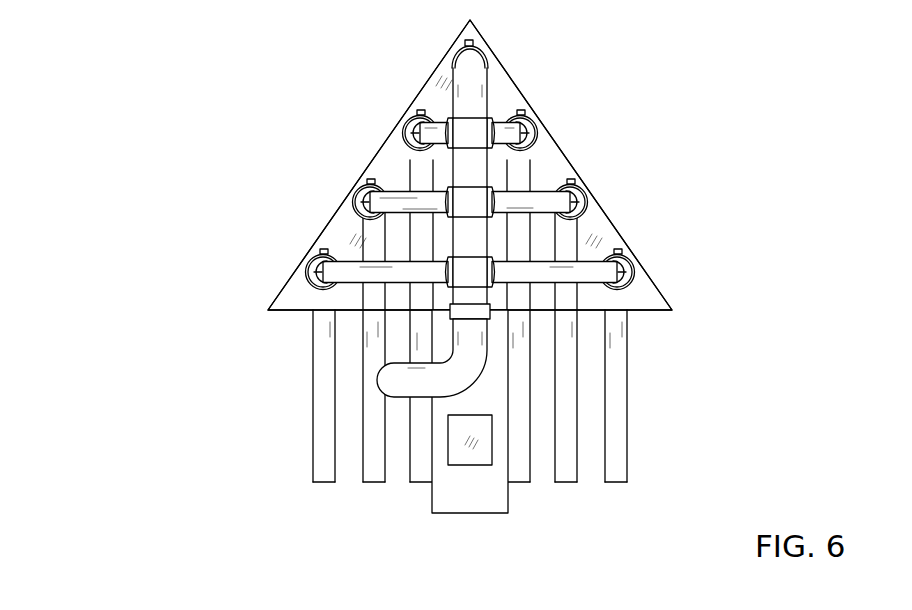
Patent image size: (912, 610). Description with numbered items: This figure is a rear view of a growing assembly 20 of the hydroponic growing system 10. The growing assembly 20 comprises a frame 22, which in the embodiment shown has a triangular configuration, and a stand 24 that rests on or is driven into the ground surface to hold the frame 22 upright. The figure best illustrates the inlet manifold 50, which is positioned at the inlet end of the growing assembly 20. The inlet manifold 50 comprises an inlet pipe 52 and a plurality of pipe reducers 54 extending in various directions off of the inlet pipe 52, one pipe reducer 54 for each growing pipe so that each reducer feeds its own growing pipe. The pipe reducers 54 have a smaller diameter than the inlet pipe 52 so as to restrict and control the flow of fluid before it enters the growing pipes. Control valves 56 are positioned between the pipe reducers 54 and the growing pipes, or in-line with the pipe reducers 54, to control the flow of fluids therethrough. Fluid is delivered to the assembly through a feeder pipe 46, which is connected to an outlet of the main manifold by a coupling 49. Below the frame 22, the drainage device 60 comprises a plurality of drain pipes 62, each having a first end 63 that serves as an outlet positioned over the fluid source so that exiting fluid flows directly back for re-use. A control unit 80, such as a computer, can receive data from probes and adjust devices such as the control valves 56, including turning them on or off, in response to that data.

The system 10 is at (132, 112).
The growing assembly 20 is at (684, 297).
The frame 22 is at (283, 290).
The stand 24 is at (491, 514).
The feeder pipe 46 is at (393, 378).
The coupling 49 is at (452, 308).
The inlet manifold 50 is at (436, 184).
The inlet pipe 52 is at (470, 63).
The pipe reducer 54 is at (405, 133).
The control valve 56 is at (474, 43).
The drainage device 60 is at (499, 357).
The drain pipe 62 is at (413, 341).
The first end 63 is at (418, 483).
The control unit 80 is at (470, 467).